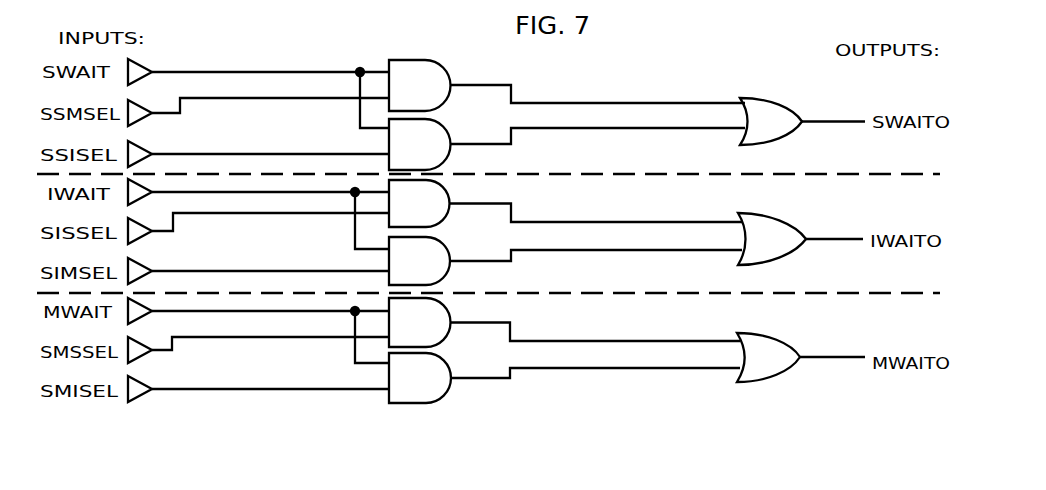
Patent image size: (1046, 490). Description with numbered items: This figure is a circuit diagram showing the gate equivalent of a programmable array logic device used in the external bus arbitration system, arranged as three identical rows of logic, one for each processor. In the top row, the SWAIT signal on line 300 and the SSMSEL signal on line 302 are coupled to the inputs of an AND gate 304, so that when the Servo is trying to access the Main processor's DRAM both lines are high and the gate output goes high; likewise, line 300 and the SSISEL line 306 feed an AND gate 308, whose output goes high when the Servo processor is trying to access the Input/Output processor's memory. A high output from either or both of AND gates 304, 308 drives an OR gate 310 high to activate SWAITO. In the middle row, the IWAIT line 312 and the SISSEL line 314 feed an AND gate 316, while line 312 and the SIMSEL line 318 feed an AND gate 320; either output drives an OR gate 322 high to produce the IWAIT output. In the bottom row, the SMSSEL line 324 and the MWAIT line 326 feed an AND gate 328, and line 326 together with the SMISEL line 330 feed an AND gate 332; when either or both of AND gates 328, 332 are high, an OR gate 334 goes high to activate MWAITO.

The line 300 is at (248, 70).
The line 302 is at (247, 99).
The AND gate 304 is at (431, 72).
The line 306 is at (300, 153).
The AND gate 308 is at (424, 140).
The OR gate 310 is at (750, 103).
The line 312 is at (223, 193).
The line 314 is at (229, 214).
The AND gate 316 is at (430, 200).
The line 318 is at (276, 271).
The AND gate 320 is at (438, 262).
The OR gate 322 is at (780, 245).
The line 324 is at (220, 338).
The line 326 is at (227, 313).
The AND gate 328 is at (434, 321).
The line 330 is at (232, 391).
The AND gate 332 is at (442, 385).
The OR gate 334 is at (777, 362).